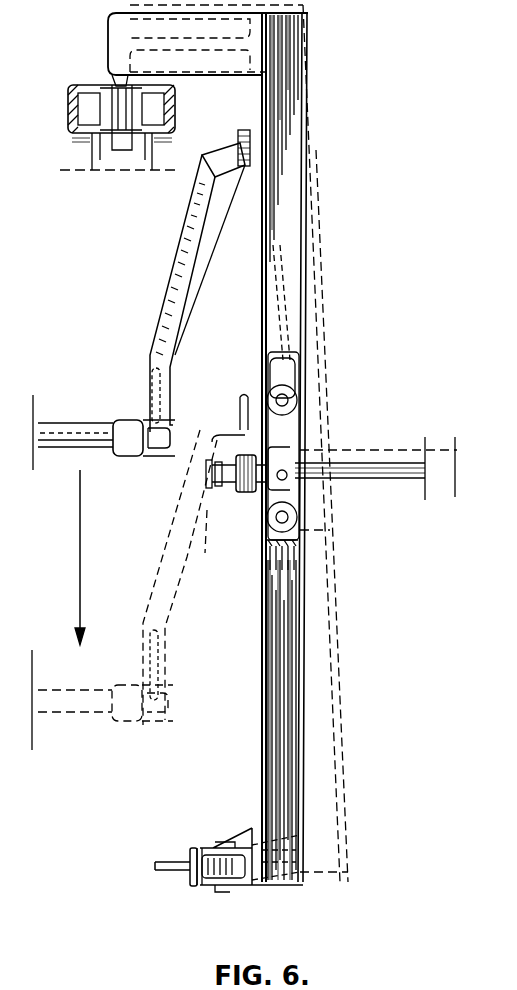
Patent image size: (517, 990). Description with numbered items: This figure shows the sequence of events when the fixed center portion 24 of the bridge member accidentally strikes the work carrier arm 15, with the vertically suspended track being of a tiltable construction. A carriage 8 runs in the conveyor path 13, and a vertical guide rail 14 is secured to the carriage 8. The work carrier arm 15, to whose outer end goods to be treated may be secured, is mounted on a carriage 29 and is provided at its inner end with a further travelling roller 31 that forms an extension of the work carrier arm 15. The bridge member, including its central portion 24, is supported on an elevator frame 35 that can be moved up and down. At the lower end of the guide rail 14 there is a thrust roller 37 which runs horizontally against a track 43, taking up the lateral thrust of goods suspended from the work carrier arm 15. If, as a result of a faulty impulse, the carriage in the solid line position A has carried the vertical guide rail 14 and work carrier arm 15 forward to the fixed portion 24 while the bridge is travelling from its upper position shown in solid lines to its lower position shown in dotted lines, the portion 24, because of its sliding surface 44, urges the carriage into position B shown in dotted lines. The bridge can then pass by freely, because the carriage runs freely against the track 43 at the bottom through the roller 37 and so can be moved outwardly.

The carriage 8 is at (122, 53).
The conveyor path 13 is at (80, 88).
The vertical guide rail 14 is at (305, 682).
The work carrier arm 15 is at (342, 470).
The central portion of the bridge 24 is at (228, 147).
The carriage 29 is at (280, 437).
The travelling roller 31 is at (203, 470).
The elevator frame 35 is at (85, 437).
The thrust roller 37 is at (215, 862).
The track 43 is at (178, 862).
The sliding surface 44 is at (215, 233).
The solid line position A is at (280, 885).
The dotted line position B is at (322, 874).